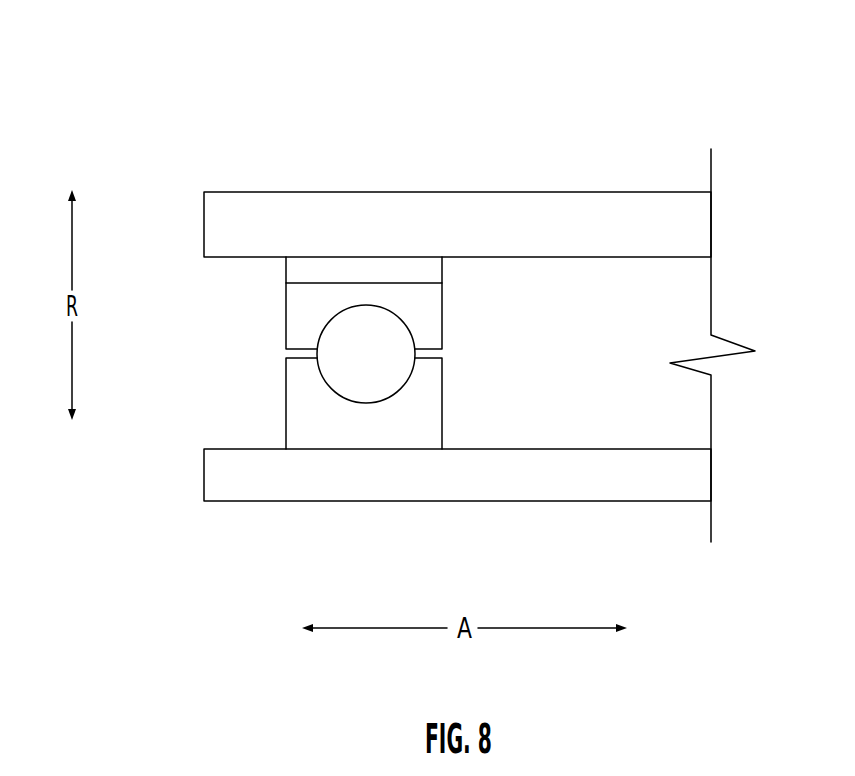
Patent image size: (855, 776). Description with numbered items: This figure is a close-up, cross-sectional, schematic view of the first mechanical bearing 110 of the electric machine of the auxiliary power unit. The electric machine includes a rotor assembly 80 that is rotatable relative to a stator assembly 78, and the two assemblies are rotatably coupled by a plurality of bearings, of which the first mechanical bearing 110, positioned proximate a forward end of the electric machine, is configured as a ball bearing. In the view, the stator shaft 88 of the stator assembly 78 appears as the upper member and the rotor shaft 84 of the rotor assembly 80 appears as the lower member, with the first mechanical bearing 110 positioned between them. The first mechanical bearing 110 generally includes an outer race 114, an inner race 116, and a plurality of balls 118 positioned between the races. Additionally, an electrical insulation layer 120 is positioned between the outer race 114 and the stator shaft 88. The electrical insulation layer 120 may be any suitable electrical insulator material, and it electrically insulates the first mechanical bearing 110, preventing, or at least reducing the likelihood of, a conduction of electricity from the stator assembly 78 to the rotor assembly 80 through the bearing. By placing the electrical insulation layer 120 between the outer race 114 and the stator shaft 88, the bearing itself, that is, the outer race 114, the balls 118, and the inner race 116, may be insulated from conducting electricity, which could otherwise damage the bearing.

The stator assembly 78 is at (598, 86).
The rotor assembly 80 is at (547, 520).
The rotor shaft 84 is at (382, 482).
The stator shaft 88 is at (483, 208).
The first mechanical bearing 110 is at (195, 360).
The outer race 114 is at (422, 300).
The inner race 116 is at (425, 382).
The balls 118 is at (340, 370).
The electrical insulation layer 120 is at (320, 270).